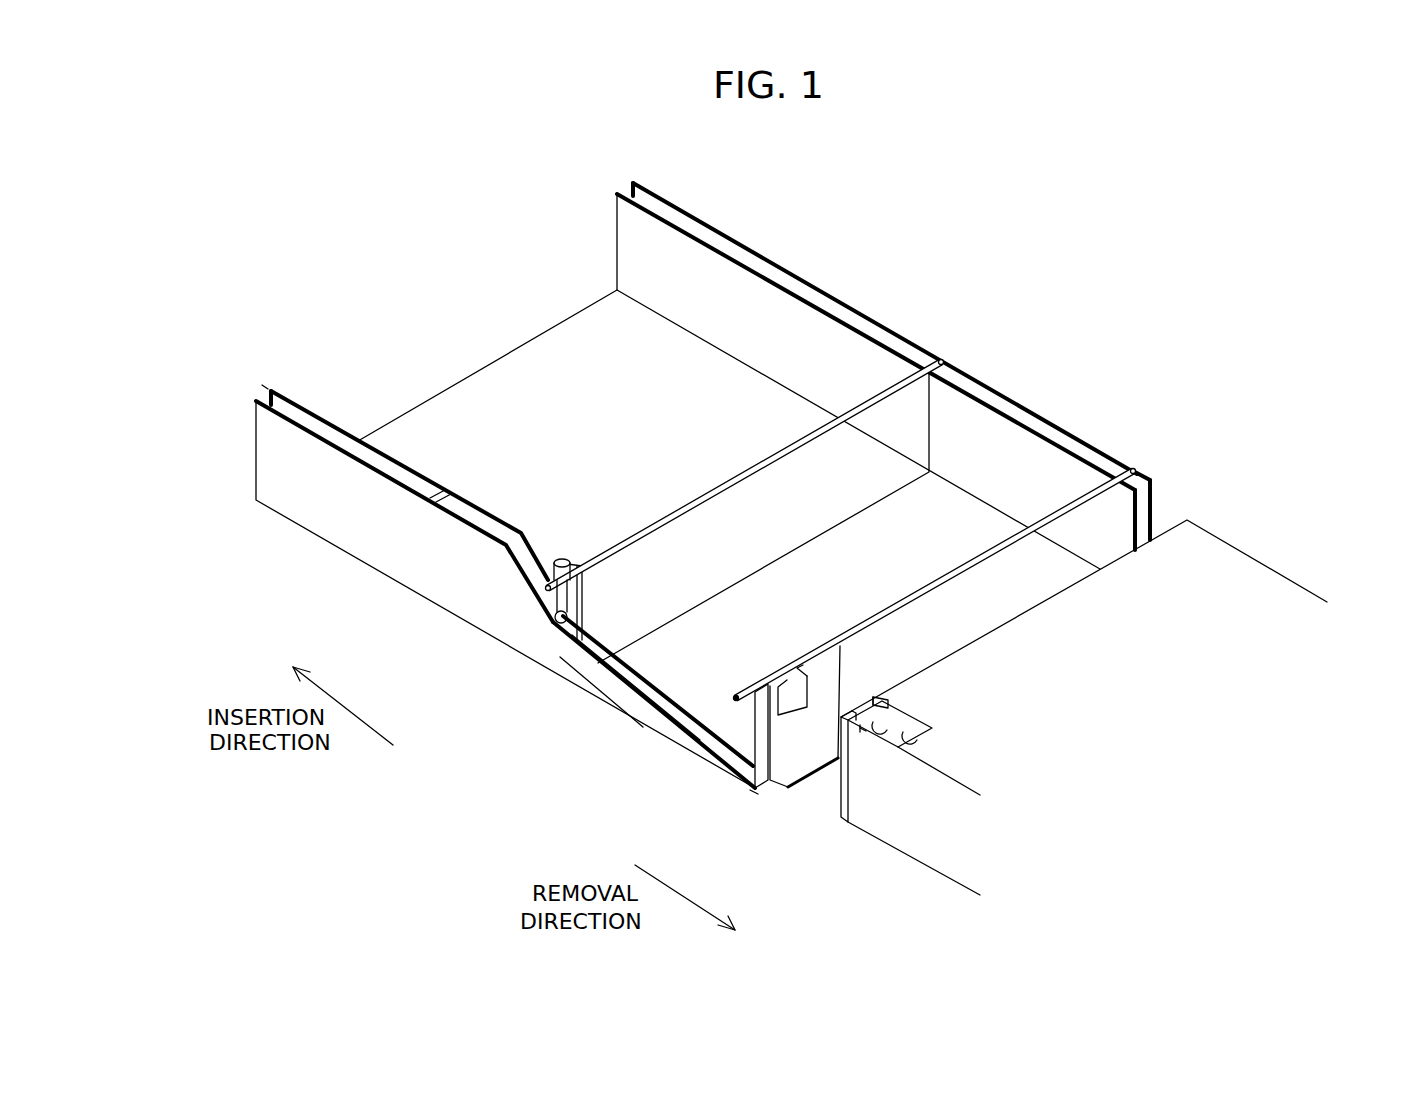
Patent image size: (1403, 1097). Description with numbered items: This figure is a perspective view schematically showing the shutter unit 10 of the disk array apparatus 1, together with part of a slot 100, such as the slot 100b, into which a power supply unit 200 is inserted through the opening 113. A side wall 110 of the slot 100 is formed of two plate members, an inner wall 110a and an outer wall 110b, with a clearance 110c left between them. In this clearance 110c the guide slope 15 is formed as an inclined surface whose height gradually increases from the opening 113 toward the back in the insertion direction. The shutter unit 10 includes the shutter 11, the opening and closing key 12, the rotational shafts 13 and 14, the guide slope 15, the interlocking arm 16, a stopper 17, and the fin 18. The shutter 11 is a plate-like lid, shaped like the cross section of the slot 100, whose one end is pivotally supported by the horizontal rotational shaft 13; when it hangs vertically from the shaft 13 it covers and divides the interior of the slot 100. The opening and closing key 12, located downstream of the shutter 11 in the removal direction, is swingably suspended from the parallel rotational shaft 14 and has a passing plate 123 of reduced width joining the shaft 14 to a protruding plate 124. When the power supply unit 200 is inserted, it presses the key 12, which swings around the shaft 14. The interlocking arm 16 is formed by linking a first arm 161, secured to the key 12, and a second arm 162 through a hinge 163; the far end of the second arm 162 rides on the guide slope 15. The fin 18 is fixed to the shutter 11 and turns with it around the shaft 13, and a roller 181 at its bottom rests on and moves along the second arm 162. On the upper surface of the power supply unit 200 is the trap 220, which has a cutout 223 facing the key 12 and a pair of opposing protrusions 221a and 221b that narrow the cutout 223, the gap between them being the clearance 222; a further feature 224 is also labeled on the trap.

The disk array apparatus 1 is at (1112, 205).
The shutter unit 10 is at (895, 297).
The shutter 11 is at (902, 428).
The opening and closing key 12 is at (815, 691).
The rotational shaft 13 is at (945, 358).
The rotational shaft 14 is at (1131, 468).
The guide slope 15 is at (448, 497).
The interlocking arm 16 is at (630, 745).
The stopper 17 is at (560, 560).
The fin 18 is at (558, 618).
The slot 100 is at (625, 182).
The slot 100b is at (858, 303).
The side wall 110 is at (258, 352).
The inner wall 110a is at (273, 388).
The outer wall 110b is at (258, 400).
The clearance 110c is at (262, 377).
The opening 113 is at (1108, 531).
The passing plate 123 is at (800, 667).
The protruding plate 124 is at (797, 715).
The first arm 161 is at (766, 787).
The second arm 162 is at (648, 700).
The hinge 163 is at (755, 801).
The roller 181 is at (553, 626).
The power supply unit 200 is at (1287, 548).
The trap 220 is at (960, 737).
The protrusion 221a is at (871, 693).
The protrusion 221b is at (889, 700).
The clearance 222 is at (881, 727).
The cutout 223 is at (863, 732).
The recess 224 is at (912, 740).